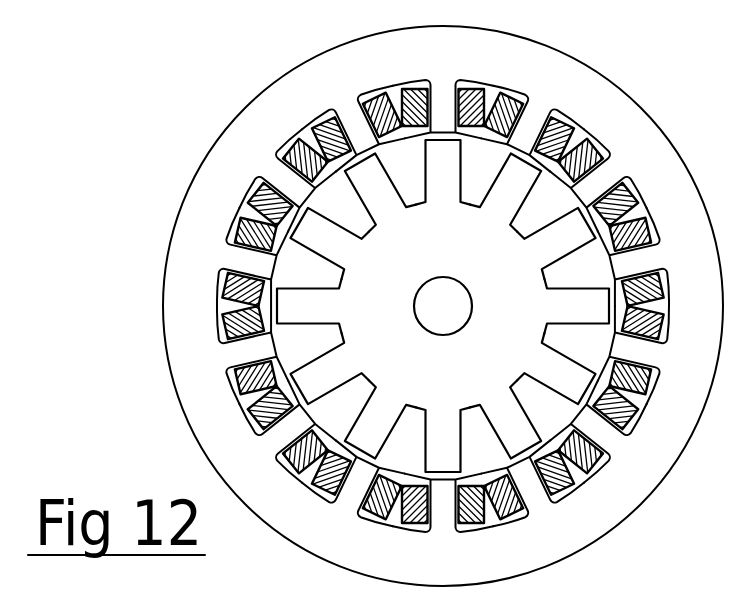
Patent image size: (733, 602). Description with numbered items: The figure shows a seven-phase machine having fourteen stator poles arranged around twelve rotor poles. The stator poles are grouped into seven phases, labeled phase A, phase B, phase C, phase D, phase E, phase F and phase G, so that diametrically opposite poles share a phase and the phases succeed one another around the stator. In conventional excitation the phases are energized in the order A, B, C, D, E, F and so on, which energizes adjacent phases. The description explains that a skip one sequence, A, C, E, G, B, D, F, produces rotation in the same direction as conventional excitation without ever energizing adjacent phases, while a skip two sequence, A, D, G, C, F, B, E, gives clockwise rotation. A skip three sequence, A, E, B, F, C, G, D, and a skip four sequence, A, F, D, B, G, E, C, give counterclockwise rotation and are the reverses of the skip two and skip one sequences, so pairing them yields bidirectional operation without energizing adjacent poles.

The phase A is at (443, 94).
The phase B is at (358, 129).
The phase C is at (289, 183).
The phase D is at (246, 262).
The phase E is at (247, 349).
The phase F is at (289, 428).
The phase G is at (358, 486).